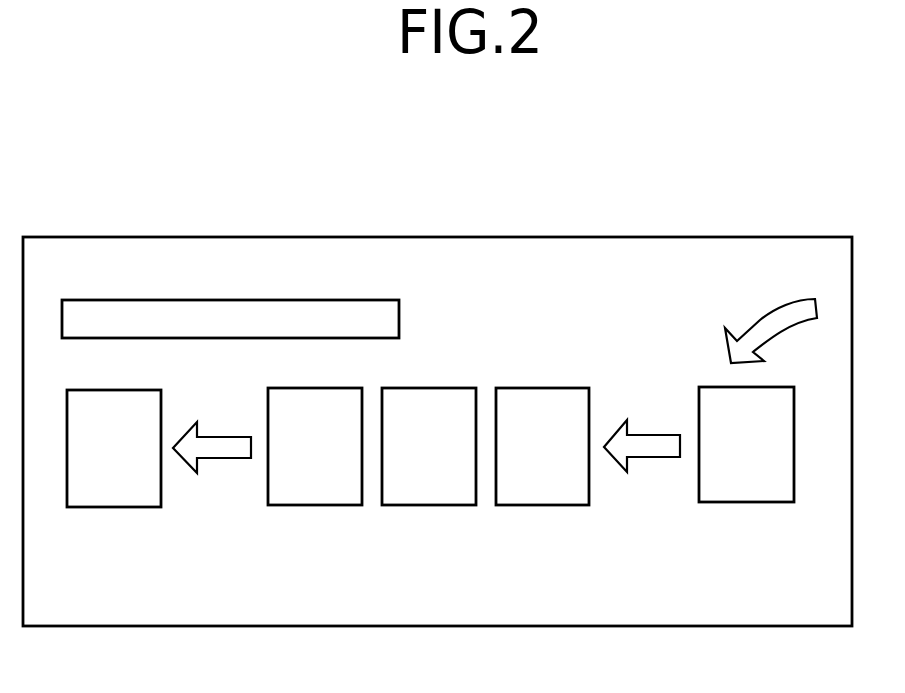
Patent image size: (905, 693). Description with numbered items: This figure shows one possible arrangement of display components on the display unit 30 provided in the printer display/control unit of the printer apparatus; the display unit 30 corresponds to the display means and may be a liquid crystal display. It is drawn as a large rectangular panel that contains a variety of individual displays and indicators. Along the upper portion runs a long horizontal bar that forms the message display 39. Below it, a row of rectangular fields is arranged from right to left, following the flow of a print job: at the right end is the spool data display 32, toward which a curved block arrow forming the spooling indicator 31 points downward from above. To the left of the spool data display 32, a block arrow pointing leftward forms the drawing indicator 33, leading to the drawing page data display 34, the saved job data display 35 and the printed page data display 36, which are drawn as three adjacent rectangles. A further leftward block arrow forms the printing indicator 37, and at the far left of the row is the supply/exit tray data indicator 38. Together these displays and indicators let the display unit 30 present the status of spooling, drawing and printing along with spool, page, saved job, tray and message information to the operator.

The display unit 30 is at (133, 237).
The spooling indicator 31 is at (757, 313).
The spool data display 32 is at (755, 502).
The drawing indicator 33 is at (657, 457).
The drawing page data display 34 is at (547, 505).
The saved job data display 35 is at (430, 505).
The printed page data display 36 is at (323, 505).
The printing indicator 37 is at (224, 458).
The supply/exit tray data indicator 38 is at (120, 507).
The message display 39 is at (400, 312).